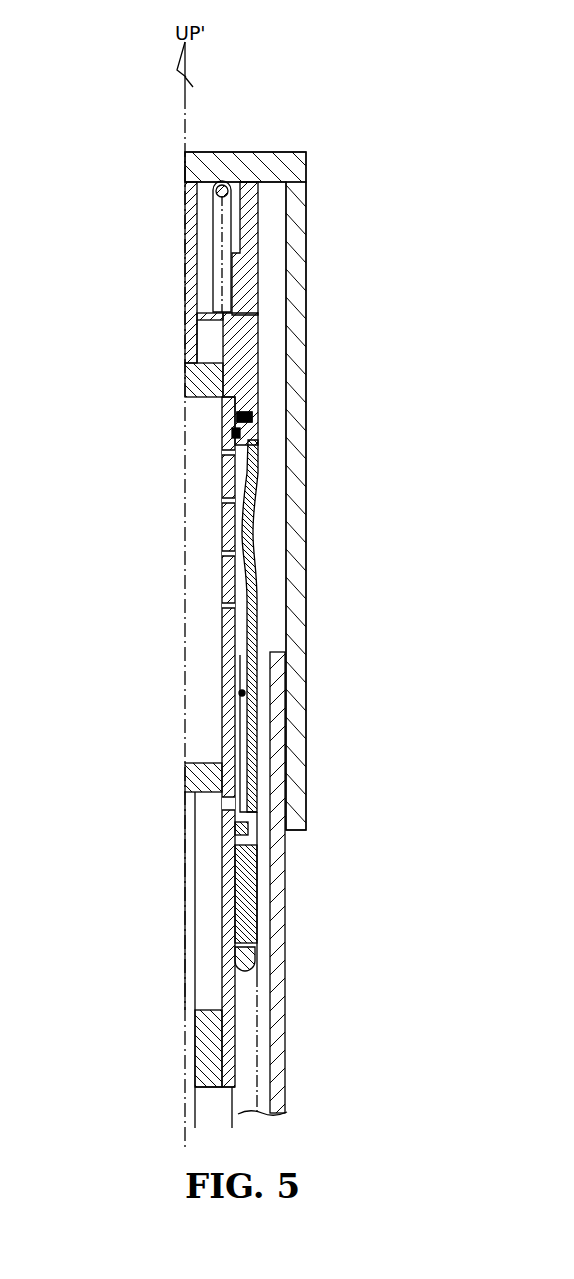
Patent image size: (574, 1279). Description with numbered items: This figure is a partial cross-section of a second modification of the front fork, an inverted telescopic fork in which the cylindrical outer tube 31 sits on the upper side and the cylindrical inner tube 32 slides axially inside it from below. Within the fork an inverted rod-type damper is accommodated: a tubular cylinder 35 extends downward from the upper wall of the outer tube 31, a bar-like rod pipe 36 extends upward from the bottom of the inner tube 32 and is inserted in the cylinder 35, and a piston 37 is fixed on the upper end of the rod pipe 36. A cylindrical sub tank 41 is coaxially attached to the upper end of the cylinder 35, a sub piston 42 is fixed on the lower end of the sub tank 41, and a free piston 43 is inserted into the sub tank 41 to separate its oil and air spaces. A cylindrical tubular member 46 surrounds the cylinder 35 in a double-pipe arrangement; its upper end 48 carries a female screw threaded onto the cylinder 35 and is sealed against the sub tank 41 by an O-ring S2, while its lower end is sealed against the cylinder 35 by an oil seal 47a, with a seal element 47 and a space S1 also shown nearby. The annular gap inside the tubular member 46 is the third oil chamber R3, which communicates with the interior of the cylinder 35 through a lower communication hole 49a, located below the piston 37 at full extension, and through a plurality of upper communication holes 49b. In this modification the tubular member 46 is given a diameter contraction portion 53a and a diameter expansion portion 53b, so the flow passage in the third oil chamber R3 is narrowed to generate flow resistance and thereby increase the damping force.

The outer tube 31 is at (298, 231).
The inner tube 32 is at (285, 1024).
The cylinder 35 is at (230, 742).
The rod pipe 36 is at (190, 944).
The piston 37 is at (223, 778).
The sub tank 41 is at (255, 358).
The sub piston 42 is at (228, 388).
The free piston 43 is at (257, 295).
The tubular member 46 is at (313, 626).
The plug 47 is at (250, 843).
The oil seal 47a is at (249, 828).
The upper end of the tubular member 48 is at (254, 415).
The communication hole 49a is at (222, 803).
The communication holes 49b is at (225, 553).
The diameter contraction portion 53a is at (258, 585).
The diameter expansion portion 53b is at (253, 540).
The third oil chamber R3 is at (246, 693).
The first space S1 is at (238, 416).
The O-ring S2 is at (230, 432).